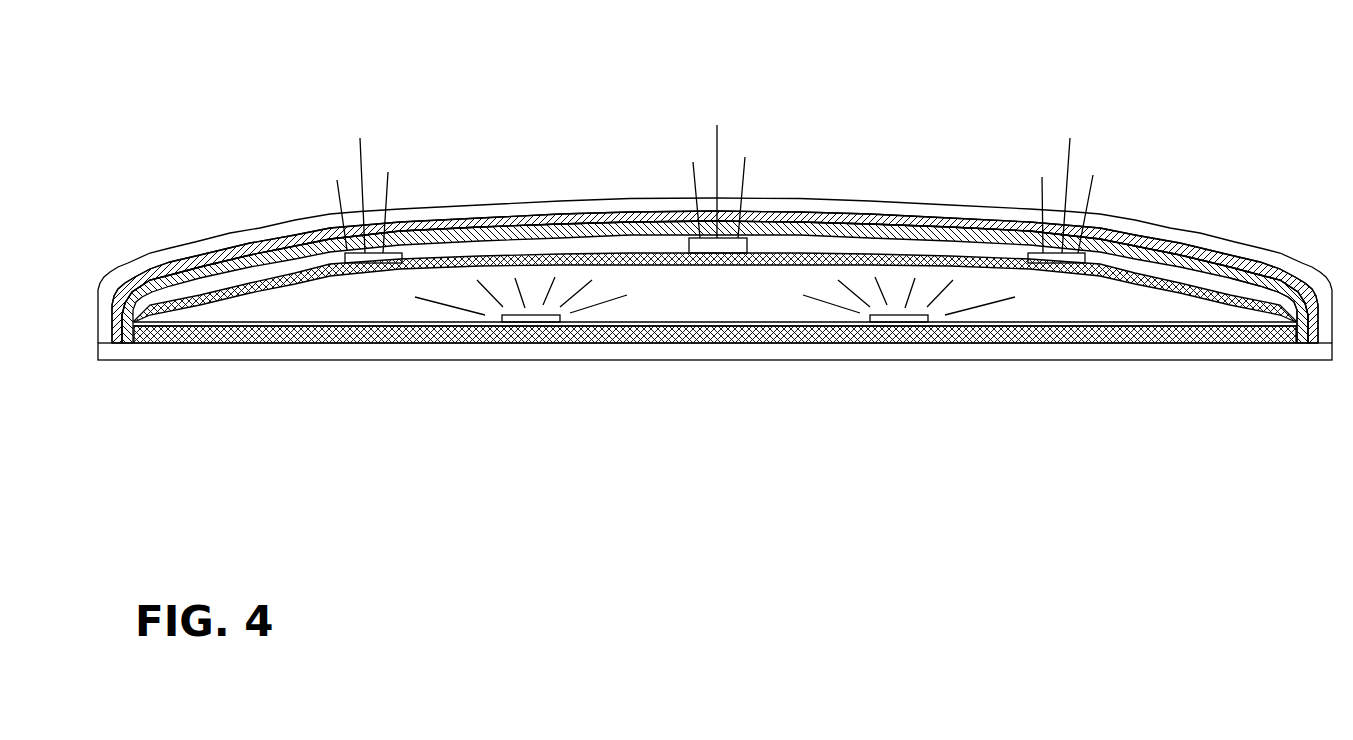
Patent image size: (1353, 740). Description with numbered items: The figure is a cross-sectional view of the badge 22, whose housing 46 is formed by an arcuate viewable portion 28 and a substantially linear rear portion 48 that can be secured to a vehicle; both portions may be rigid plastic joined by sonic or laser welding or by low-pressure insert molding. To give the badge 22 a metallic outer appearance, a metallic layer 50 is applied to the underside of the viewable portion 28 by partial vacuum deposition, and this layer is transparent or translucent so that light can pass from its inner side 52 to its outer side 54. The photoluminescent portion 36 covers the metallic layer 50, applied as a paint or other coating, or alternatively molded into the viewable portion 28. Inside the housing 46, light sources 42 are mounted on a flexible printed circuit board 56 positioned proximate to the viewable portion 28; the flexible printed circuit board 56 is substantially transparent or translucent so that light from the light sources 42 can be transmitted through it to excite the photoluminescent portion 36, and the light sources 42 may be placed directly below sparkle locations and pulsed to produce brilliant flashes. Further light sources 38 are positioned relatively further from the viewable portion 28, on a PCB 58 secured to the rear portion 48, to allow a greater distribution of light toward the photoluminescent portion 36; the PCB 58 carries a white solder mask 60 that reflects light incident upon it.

The badge 22 is at (226, 98).
The viewable portion 28 is at (613, 205).
The photoluminescent portion 36 is at (817, 235).
The light sources 38 is at (524, 322).
The light sources 42 is at (363, 264).
The housing 46 is at (117, 262).
The rear portion 48 is at (1153, 352).
The metallic layer 50 is at (898, 213).
The inner side 52 is at (1230, 252).
The outer side 54 is at (1147, 235).
The flexible printed circuit board 56 is at (498, 257).
The PCB 58 is at (1100, 345).
The white solder mask 60 is at (237, 323).